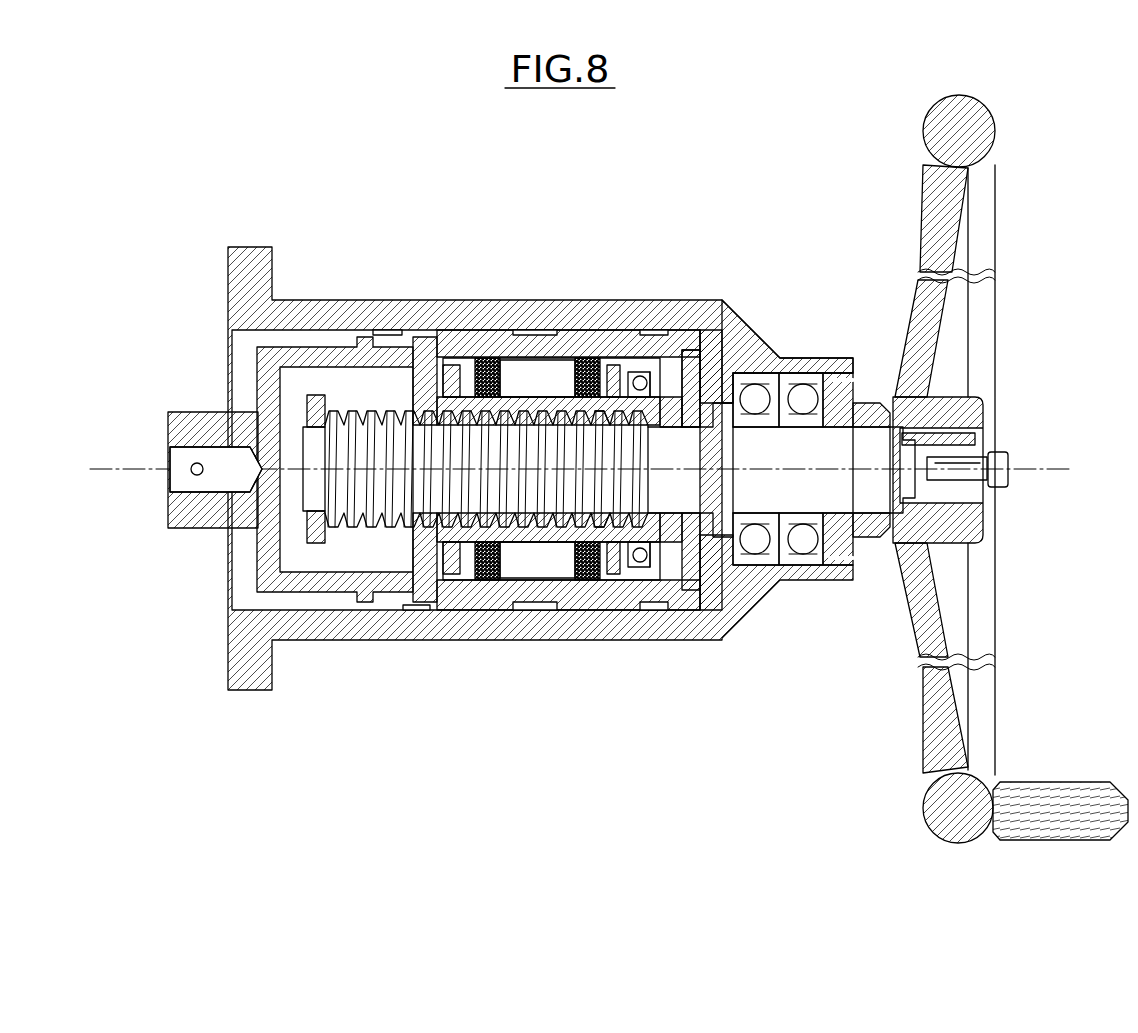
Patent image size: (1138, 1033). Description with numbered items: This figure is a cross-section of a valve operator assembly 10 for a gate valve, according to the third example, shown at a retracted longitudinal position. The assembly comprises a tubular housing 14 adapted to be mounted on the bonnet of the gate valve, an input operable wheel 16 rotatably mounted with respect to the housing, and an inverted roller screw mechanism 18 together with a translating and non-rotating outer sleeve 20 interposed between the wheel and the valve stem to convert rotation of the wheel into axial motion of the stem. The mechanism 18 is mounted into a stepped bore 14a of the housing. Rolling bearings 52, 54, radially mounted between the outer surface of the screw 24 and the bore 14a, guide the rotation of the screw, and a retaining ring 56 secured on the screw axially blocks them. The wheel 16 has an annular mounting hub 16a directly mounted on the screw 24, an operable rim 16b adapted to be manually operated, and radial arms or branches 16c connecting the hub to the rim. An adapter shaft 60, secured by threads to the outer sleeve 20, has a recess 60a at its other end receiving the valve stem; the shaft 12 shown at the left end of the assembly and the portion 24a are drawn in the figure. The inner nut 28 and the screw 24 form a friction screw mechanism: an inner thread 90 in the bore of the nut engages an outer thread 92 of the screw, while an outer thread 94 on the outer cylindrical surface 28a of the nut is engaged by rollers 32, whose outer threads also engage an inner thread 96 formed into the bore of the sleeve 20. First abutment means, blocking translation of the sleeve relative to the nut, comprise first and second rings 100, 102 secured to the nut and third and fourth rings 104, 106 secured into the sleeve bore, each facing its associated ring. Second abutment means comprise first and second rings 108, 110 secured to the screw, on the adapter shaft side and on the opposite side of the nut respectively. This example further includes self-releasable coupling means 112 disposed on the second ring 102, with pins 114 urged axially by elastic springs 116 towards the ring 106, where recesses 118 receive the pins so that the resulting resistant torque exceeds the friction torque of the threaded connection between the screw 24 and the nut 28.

The valve operator assembly 10 is at (660, 188).
The pinion shaft 12 is at (168, 456).
The tubular housing 14 is at (386, 298).
The bore 14a is at (735, 325).
The input operable wheel 16 is at (992, 100).
The annular mounting hub 16a is at (960, 528).
The operable rim 16b is at (993, 376).
The radial arms or branches 16c is at (940, 342).
The inverted roller screw mechanism 18 is at (710, 600).
The translating and non-rotating outer sleeve 20 is at (567, 572).
The screw 24 is at (693, 486).
The shaft bore 24a is at (130, 448).
The inner nut 28 is at (572, 393).
The outer cylindrical surface 28a is at (608, 378).
The rollers 32 is at (592, 588).
The rolling bearing 52 is at (768, 568).
The rolling bearing 54 is at (812, 568).
The retaining ring 56 is at (870, 530).
The adapter shaft 60 is at (327, 343).
The recess 60a is at (190, 476).
The inner thread 90 is at (440, 345).
The outer thread 92 is at (368, 520).
The outer thread 94 is at (545, 395).
The inner thread 96 is at (500, 363).
The first ring 100 is at (520, 600).
The second ring 102 is at (655, 555).
The third ring 104 is at (435, 580).
The fourth ring 106 is at (688, 562).
The first ring 108 is at (316, 540).
The second ring 110 is at (690, 592).
The self-releasable coupling means 112 is at (668, 398).
The pins 114 is at (646, 370).
The elastic springs 116 is at (633, 372).
The recesses 118 is at (693, 390).